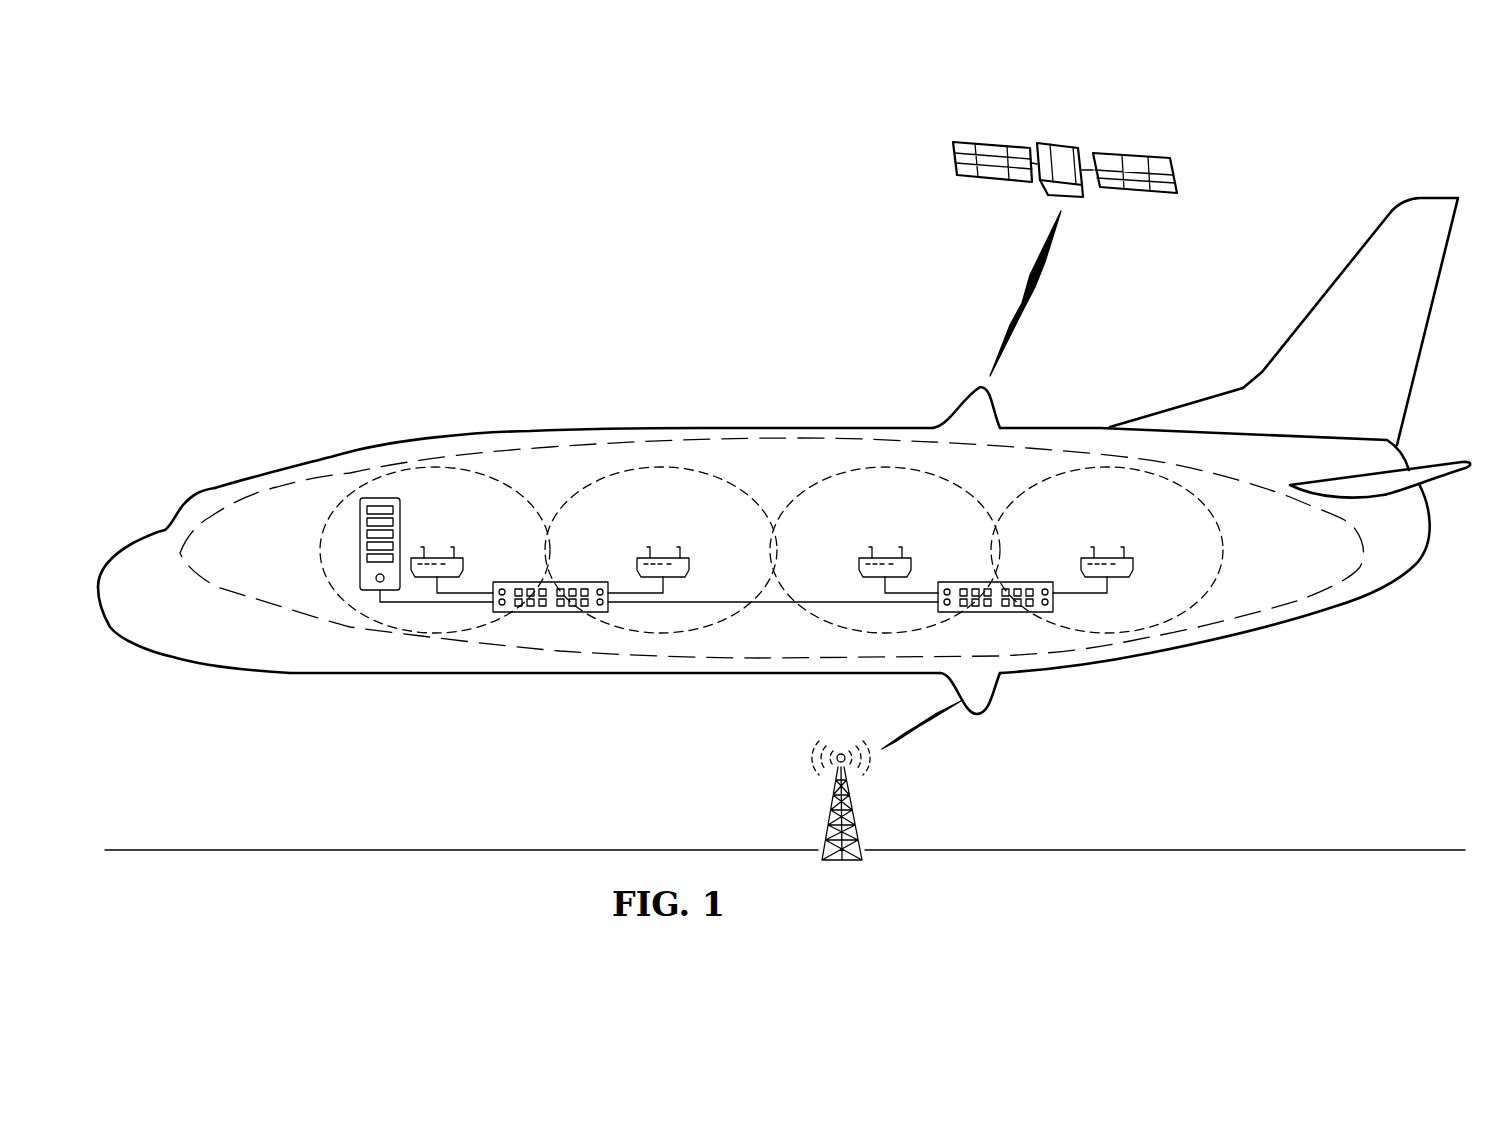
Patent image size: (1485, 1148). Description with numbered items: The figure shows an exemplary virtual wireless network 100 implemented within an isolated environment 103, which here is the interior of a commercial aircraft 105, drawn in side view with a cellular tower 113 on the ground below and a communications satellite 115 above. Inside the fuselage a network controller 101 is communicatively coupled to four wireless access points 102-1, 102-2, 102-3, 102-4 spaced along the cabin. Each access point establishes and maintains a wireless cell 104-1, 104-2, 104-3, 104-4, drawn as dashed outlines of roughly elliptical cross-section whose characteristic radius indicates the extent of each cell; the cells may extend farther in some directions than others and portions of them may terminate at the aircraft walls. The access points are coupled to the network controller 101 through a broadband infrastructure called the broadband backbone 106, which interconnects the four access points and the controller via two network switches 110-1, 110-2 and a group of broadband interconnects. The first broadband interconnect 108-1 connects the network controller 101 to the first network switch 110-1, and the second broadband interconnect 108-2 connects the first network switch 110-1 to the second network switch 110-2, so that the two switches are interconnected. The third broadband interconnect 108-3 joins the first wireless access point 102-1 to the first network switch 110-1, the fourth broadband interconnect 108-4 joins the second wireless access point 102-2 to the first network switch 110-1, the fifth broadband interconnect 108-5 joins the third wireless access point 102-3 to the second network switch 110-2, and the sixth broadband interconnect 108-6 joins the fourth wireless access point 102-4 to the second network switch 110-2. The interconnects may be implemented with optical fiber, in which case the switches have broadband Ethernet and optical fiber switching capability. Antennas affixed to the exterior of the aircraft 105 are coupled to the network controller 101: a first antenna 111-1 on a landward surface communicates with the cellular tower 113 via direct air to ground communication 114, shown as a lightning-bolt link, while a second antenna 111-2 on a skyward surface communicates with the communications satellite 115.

The virtual wireless network 100 is at (283, 615).
The network controller 101 is at (360, 550).
The first wireless access point 102-1 is at (440, 558).
The second wireless access point 102-2 is at (665, 558).
The third wireless access point 102-3 is at (888, 558).
The fourth wireless access point 102-4 is at (1110, 558).
The isolated environment 103 is at (793, 481).
The wireless cell 104-1 is at (322, 552).
The wireless cell 104-2 is at (622, 470).
The wireless cell 104-3 is at (888, 468).
The wireless cell 104-4 is at (1225, 548).
The aircraft 105 is at (150, 535).
The broadband backbone 106 is at (510, 695).
The first broadband interconnect 108-1 is at (395, 603).
The second broadband interconnect 108-2 is at (773, 603).
The third broadband interconnect 108-3 is at (492, 600).
The fourth broadband interconnect 108-4 is at (642, 600).
The fifth broadband interconnect 108-5 is at (917, 598).
The sixth broadband interconnect 108-6 is at (1070, 598).
The first network switch 110-1 is at (580, 582).
The second network switch 110-2 is at (1025, 582).
The first antenna 111-1 is at (987, 712).
The second antenna 111-2 is at (993, 405).
The cellular tower 113 is at (828, 815).
The direct air to ground communication 114 is at (900, 740).
The communications satellite 115 is at (1058, 143).